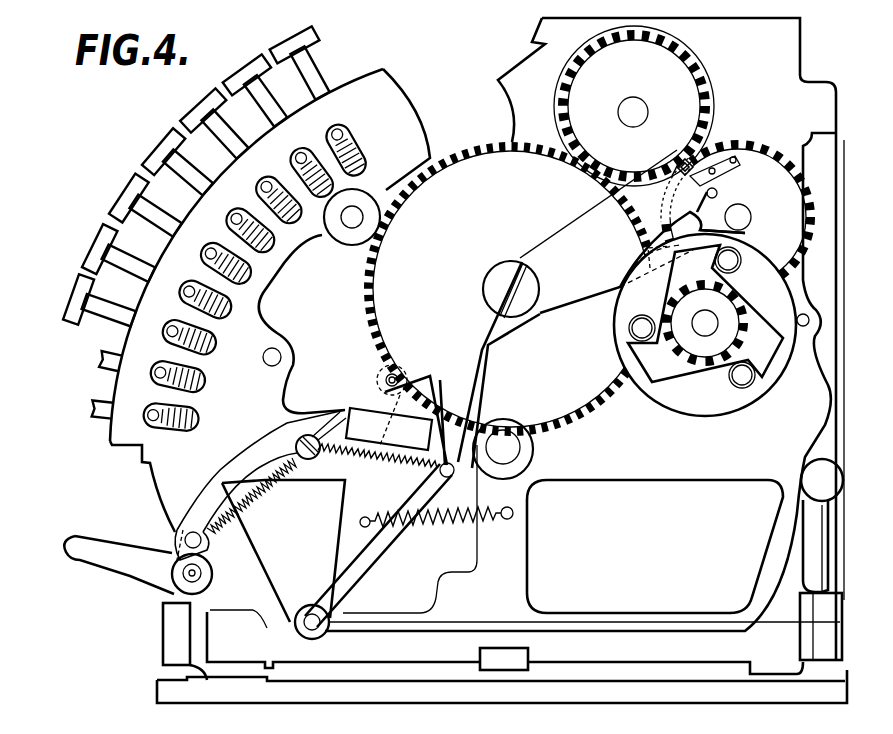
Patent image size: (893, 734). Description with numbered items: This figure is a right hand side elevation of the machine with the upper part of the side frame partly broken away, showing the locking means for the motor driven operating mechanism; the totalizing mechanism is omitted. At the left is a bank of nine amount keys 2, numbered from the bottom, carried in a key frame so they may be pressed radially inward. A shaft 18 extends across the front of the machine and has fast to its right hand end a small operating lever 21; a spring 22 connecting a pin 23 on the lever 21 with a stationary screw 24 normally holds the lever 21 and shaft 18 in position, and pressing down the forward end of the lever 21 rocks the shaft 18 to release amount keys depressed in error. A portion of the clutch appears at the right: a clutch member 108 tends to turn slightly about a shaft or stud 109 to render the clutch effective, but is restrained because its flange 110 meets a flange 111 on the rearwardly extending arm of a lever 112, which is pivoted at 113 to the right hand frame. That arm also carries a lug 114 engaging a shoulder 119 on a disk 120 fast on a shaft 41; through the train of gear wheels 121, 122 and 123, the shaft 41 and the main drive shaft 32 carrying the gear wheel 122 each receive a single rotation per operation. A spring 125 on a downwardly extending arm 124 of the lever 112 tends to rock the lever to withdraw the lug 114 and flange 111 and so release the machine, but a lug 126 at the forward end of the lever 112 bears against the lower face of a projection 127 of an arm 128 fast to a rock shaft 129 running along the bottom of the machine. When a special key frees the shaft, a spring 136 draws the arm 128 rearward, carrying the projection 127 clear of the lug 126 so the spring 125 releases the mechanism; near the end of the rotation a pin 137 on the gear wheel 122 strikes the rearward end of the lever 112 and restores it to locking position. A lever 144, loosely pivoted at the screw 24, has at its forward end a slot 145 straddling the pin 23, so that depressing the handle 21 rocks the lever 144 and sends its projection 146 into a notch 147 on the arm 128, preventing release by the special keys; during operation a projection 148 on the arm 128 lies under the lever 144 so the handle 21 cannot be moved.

The amount keys 2 is at (186, 135).
The shaft 18 is at (188, 577).
The operating lever 21 is at (122, 553).
The spring 22 is at (243, 510).
The pin 23 is at (192, 532).
The stationary screw 24 is at (308, 462).
The main drive shaft 32 is at (751, 222).
The shaft 41 is at (628, 100).
The clutch member 108 is at (693, 408).
The shaft or stud 109 is at (718, 323).
The flange 110 is at (643, 257).
The flange 111 is at (740, 234).
The lever 112 is at (583, 283).
The pivot 113 is at (517, 312).
The lug 114 is at (675, 170).
The shoulder 119 is at (680, 160).
The disk 120 is at (693, 56).
The gear wheel 121 is at (700, 82).
The gear wheel 122 is at (770, 150).
The gear wheel 123 is at (752, 347).
The downwardly extending arm 124 is at (467, 403).
The spring 125 is at (345, 447).
The lug 126 is at (380, 385).
The projection 127 is at (406, 365).
The arm 128 is at (322, 560).
The rock shaft 129 is at (337, 613).
The spring 136 is at (456, 520).
The pin 137 is at (716, 192).
The lever 144 is at (242, 452).
The slot 145 is at (212, 568).
The projection 146 is at (370, 440).
The notch 147 is at (385, 487).
The projection 148 is at (331, 492).